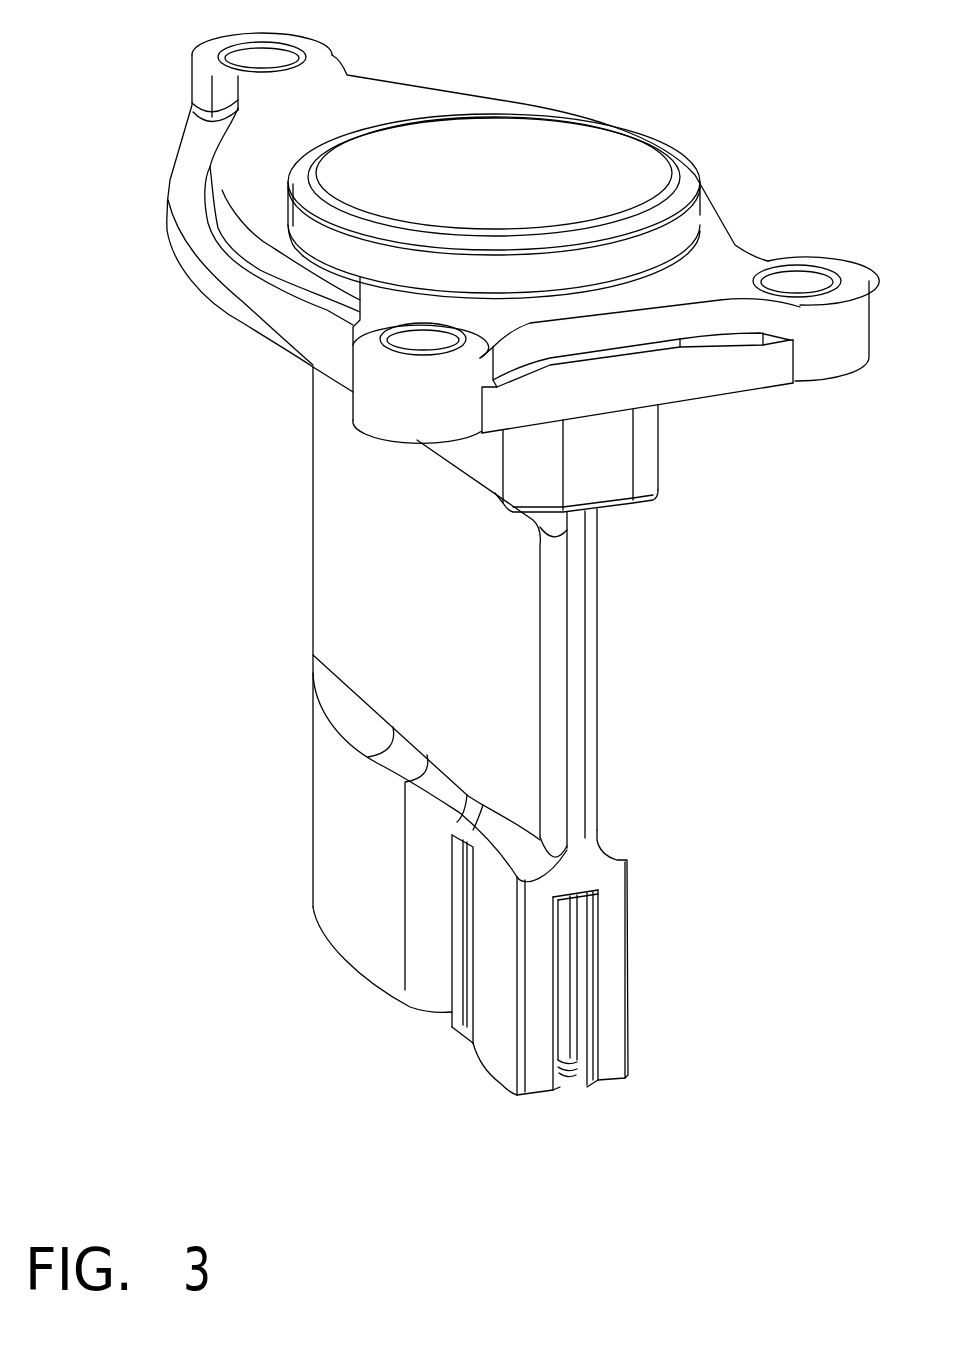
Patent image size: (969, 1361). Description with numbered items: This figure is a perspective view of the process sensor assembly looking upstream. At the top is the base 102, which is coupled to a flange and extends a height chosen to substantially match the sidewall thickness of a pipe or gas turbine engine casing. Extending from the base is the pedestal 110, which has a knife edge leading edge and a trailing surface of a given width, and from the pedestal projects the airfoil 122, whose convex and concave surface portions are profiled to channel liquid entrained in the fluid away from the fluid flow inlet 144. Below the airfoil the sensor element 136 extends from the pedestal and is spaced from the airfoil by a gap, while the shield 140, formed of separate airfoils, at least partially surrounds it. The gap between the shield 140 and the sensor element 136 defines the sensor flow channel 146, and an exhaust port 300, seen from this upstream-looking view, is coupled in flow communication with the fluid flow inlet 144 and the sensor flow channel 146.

The base 102 is at (216, 284).
The pedestal 110 is at (472, 608).
The airfoil 122 is at (355, 902).
The shield 140 is at (613, 983).
The fluid flow inlet 144 is at (462, 1025).
The sensor flow channel 146 is at (565, 1030).
The sensor element 136 is at (567, 1080).
The exhaust port 300 is at (567, 942).